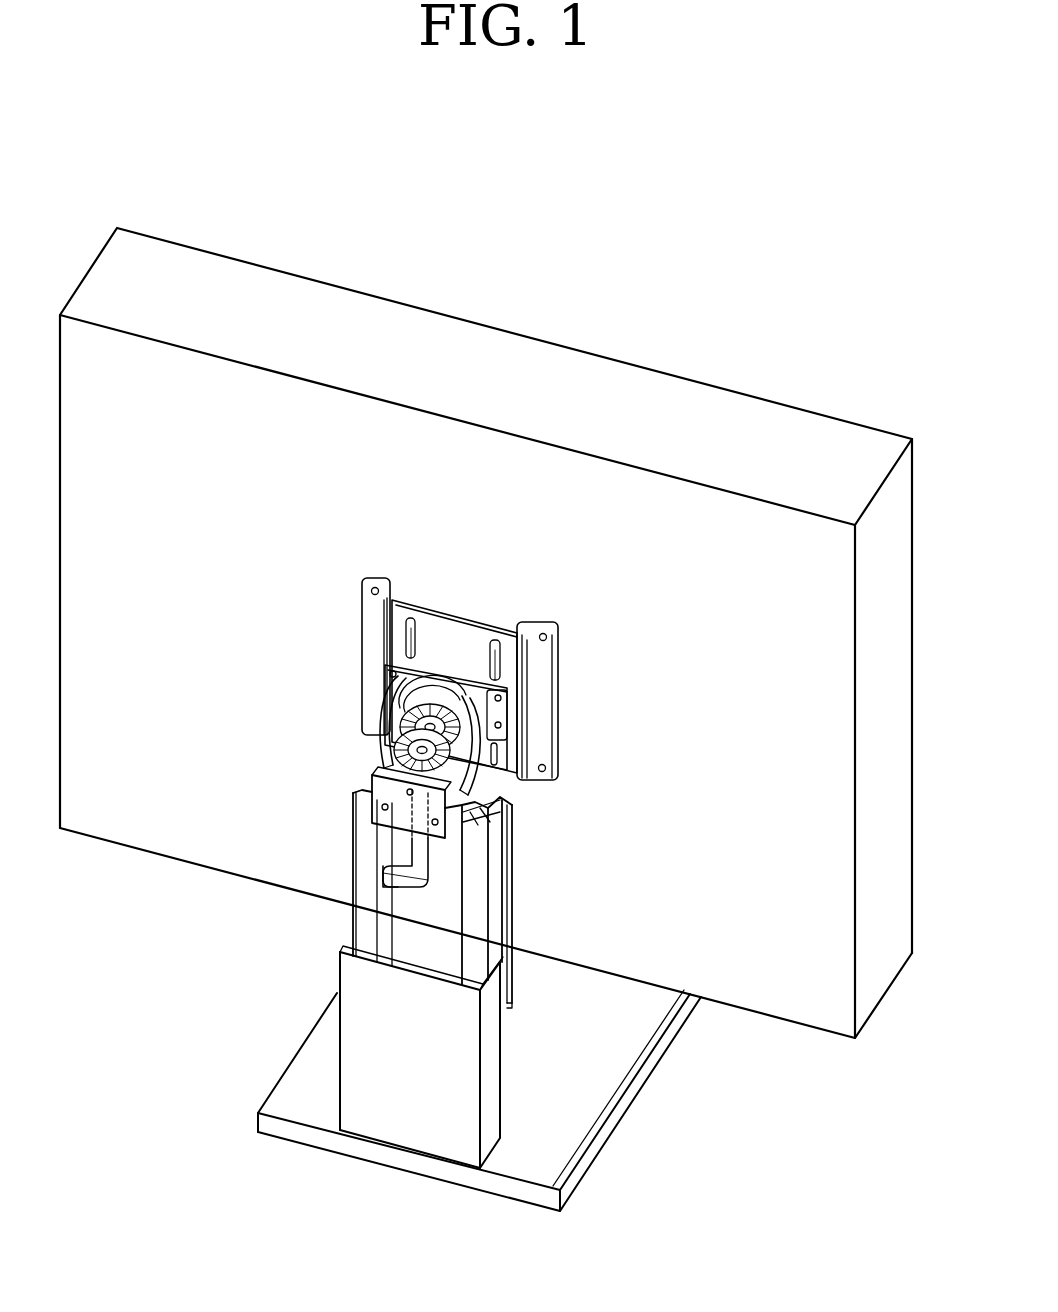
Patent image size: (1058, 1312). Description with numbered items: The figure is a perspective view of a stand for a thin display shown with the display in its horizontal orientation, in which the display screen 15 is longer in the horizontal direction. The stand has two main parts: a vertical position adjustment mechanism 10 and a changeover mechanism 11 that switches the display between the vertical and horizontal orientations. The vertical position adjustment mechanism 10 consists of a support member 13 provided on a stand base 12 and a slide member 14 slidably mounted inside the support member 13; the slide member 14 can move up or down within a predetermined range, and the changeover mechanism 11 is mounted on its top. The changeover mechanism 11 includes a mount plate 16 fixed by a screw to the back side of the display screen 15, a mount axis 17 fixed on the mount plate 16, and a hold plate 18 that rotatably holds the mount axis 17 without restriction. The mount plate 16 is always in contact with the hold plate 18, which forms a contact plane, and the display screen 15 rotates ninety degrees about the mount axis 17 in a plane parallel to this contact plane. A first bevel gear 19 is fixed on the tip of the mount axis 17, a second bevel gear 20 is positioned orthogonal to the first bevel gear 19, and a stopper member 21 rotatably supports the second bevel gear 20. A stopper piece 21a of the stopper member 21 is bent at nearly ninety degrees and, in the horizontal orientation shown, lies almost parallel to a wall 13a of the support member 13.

The vertical position adjustment mechanism 10 is at (290, 953).
The changeover mechanism 11 is at (340, 724).
The stand base 12 is at (563, 1150).
The support member 13 is at (495, 1070).
The wall of the support member 13a is at (365, 1070).
The slide member 14 is at (365, 920).
The display screen 15 is at (523, 370).
The mount plate 16 is at (507, 662).
The mount axis 17 is at (507, 708).
The hold plate 18 is at (422, 673).
The first bevel gear 19 is at (383, 715).
The second bevel gear 20 is at (477, 795).
The stopper member 21 is at (420, 860).
The stopper piece 21a is at (390, 850).